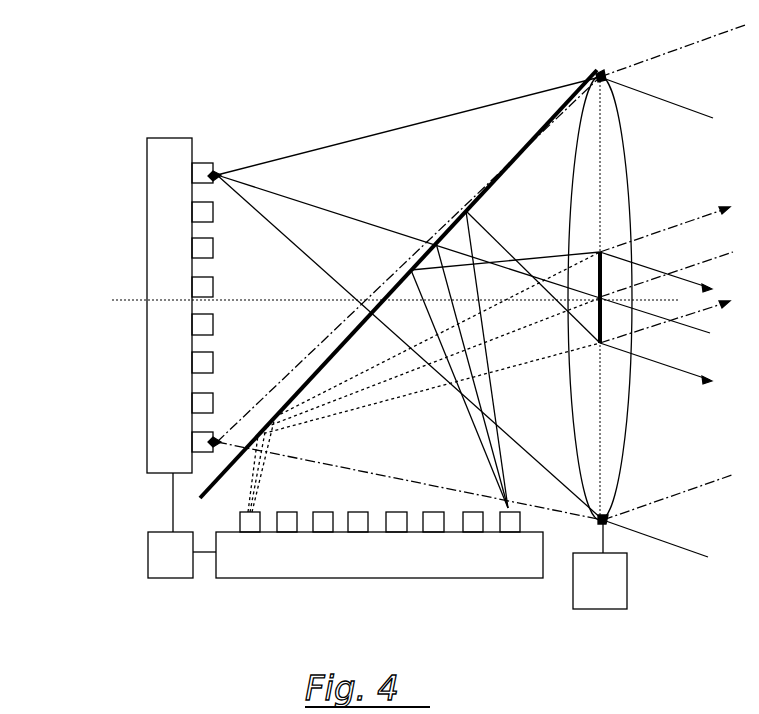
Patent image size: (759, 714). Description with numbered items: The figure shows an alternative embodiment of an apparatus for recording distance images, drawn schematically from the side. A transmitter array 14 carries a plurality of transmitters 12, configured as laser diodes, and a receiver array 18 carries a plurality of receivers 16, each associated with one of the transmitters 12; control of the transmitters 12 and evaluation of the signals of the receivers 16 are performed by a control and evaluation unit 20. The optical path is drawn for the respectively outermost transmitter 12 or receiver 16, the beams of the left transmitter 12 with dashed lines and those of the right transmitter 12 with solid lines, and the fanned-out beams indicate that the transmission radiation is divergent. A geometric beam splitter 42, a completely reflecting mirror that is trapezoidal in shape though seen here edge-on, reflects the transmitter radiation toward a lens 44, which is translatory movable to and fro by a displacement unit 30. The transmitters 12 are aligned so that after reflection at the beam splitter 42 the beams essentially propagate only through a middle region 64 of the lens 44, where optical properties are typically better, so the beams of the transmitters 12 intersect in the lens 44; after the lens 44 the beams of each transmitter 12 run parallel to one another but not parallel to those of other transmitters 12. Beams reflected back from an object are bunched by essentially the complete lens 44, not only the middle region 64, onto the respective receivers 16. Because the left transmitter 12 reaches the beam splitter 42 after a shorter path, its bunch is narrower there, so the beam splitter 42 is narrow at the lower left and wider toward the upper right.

The transmitter 12 is at (288, 519).
The transmitter array 14 is at (379, 568).
The receiver 16 is at (145, 305).
The receiver array 18 is at (180, 282).
The control and evaluation unit 20 is at (182, 567).
The displacement unit 30 is at (612, 592).
The beam splitter 42 is at (595, 76).
The lens 44 is at (612, 450).
The middle region 64 is at (603, 268).